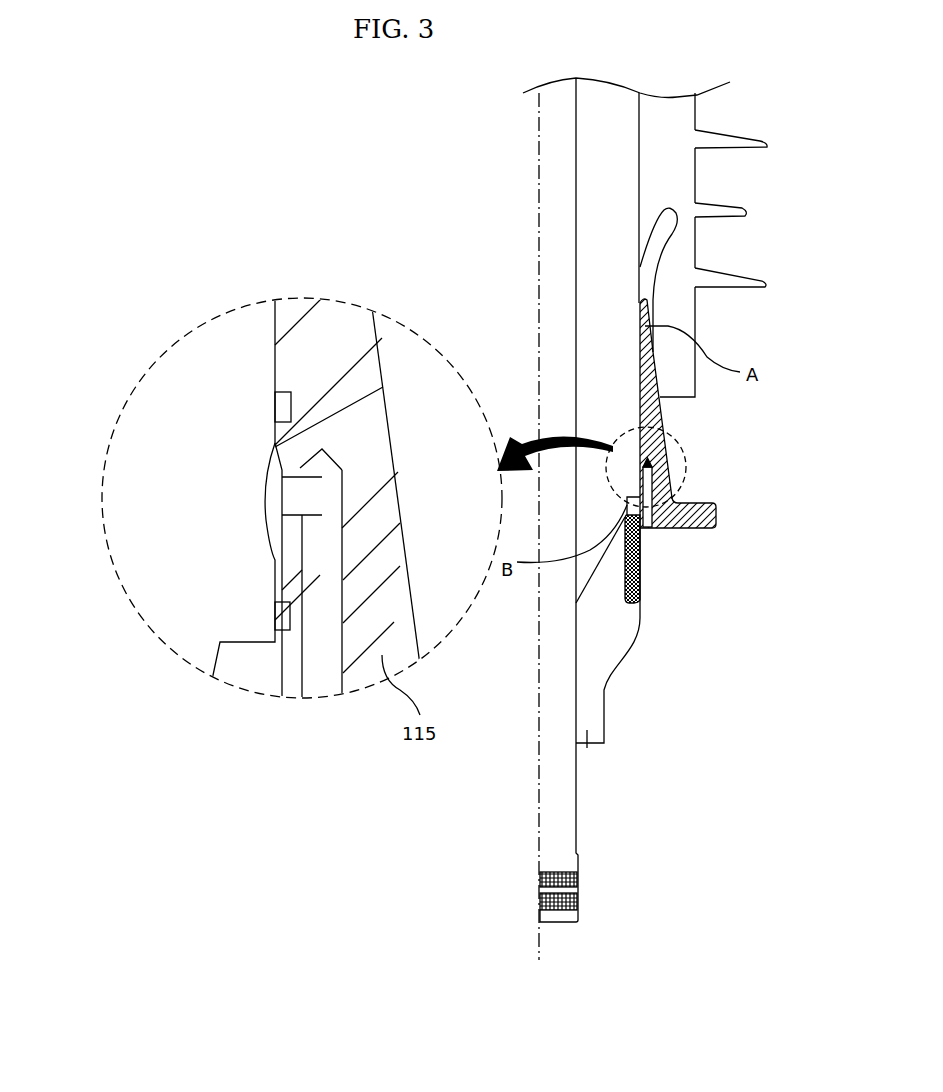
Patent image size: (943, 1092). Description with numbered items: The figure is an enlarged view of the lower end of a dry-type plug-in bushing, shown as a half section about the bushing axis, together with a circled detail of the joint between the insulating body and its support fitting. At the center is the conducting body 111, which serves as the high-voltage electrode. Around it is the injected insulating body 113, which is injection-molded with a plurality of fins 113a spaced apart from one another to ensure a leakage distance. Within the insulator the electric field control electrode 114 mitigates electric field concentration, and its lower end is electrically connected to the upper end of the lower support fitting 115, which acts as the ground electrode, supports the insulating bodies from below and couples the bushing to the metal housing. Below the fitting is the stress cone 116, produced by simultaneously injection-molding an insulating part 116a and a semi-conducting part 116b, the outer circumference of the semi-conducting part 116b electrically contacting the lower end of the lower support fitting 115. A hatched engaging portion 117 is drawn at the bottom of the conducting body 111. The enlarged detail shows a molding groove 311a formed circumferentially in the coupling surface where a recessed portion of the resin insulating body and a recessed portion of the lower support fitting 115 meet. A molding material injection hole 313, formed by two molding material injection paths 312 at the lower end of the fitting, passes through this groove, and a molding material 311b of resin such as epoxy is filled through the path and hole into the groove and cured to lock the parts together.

The conducting body 111 is at (130, 497).
The injected insulating body 113 is at (667, 133).
The fins 113a is at (733, 207).
The electric field control electrode 114 is at (677, 230).
The lower support fitting 115 is at (717, 515).
The stress cone 116 is at (605, 688).
The insulating part 116a is at (587, 748).
The semi-conducting part 116b is at (641, 567).
The engaging portion 117 is at (578, 878).
The molding groove 311a is at (277, 503).
The molding material 311b is at (277, 593).
The molding material injection path 312 is at (322, 755).
The molding material injection hole 313 is at (295, 490).